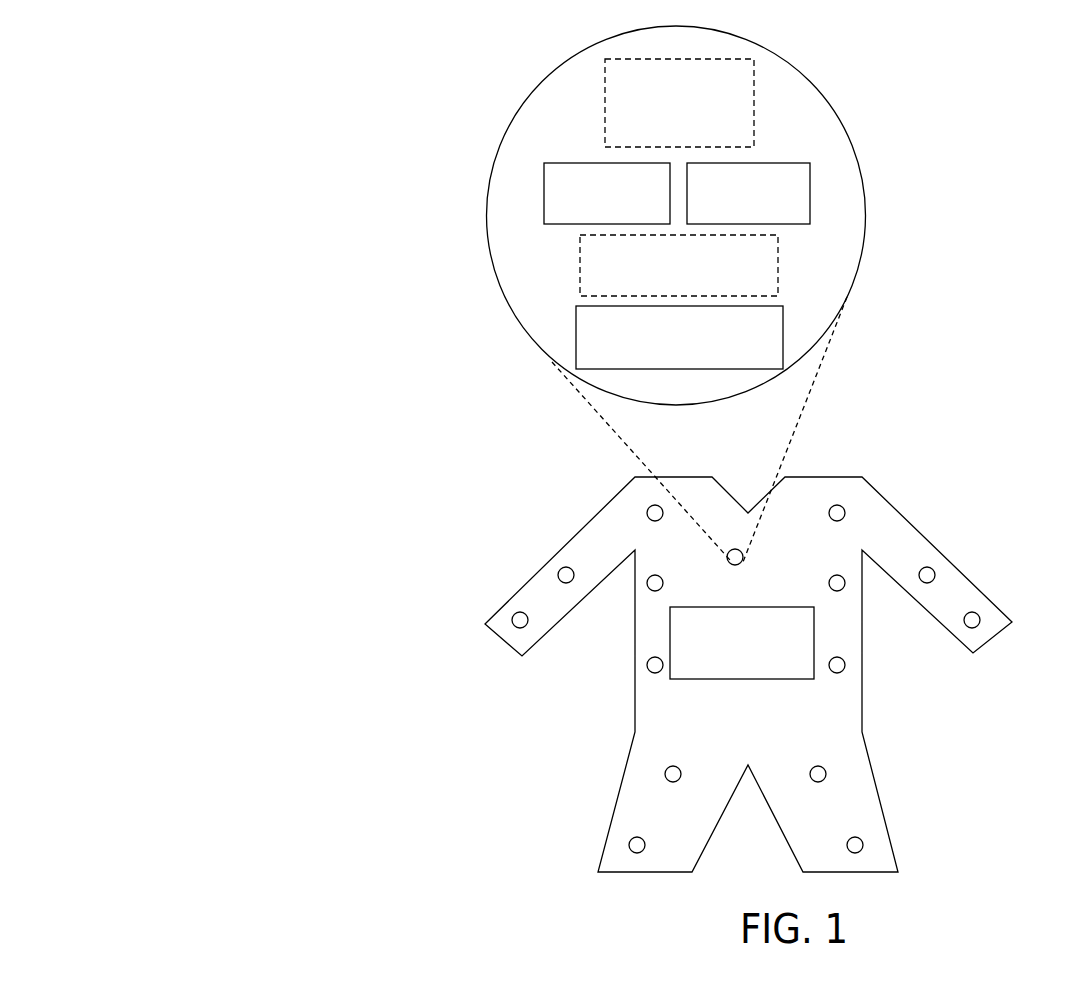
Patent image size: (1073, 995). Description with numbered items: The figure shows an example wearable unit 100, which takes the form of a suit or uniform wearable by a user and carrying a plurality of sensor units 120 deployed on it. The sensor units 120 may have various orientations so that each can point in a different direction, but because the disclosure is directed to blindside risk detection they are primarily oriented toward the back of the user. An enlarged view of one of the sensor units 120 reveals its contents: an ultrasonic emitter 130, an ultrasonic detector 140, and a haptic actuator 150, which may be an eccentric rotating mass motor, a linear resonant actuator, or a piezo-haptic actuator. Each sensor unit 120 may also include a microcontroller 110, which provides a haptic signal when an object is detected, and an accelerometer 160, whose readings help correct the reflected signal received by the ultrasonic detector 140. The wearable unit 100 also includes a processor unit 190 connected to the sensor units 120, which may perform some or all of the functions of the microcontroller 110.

The wearable unit 100 is at (58, 49).
The microcontroller 110 is at (697, 143).
The sensor unit 120 is at (578, 124).
The ultrasonic emitter 130 is at (625, 218).
The ultrasonic detector 140 is at (766, 218).
The haptic actuator 150 is at (697, 363).
The accelerometer 160 is at (697, 291).
The processor unit 190 is at (787, 670).